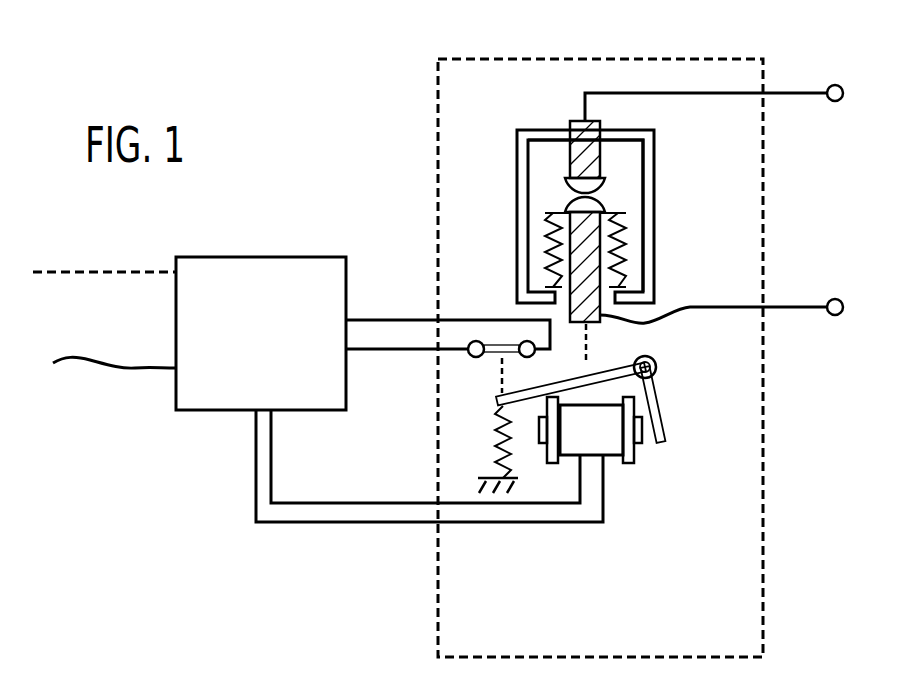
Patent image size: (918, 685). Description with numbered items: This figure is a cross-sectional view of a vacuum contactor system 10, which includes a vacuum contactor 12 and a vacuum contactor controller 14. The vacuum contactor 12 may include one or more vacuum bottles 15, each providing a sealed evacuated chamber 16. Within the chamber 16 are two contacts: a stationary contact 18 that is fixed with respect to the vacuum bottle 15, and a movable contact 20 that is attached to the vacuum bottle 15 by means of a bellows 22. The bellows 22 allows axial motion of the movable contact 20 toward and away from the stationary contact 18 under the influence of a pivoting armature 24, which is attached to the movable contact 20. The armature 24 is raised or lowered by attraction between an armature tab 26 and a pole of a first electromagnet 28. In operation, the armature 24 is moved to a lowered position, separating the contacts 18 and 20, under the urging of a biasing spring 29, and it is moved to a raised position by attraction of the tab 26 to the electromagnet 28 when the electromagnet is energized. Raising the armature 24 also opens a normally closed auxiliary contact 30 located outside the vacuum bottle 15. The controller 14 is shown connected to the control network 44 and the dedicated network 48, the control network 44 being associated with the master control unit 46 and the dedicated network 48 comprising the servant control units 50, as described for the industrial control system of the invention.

The vacuum contactor system 10 is at (360, 148).
The vacuum contactor 12 is at (766, 72).
The vacuum contactor controller 14 is at (245, 346).
The vacuum bottle 15 is at (655, 220).
The sealed evacuated chamber 16 is at (624, 170).
The stationary contact 18 is at (575, 184).
The movable contact 20 is at (578, 203).
The bellows 22 is at (622, 262).
The pivoting armature 24 is at (617, 360).
The armature tab 26 is at (667, 408).
The first electromagnet 28 is at (578, 441).
The biasing spring 29 is at (493, 435).
The normally closed auxiliary contact 30 is at (481, 368).
The control network 44 is at (90, 272).
The master control unit 46 is at (272, 226).
The dedicated network 48 is at (83, 360).
The servant control unit 50 is at (272, 226).